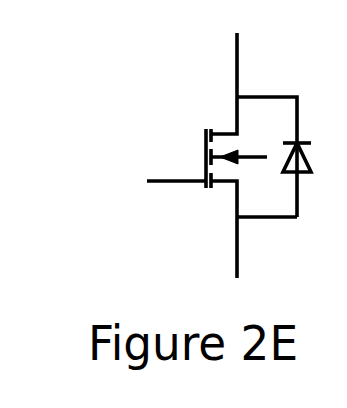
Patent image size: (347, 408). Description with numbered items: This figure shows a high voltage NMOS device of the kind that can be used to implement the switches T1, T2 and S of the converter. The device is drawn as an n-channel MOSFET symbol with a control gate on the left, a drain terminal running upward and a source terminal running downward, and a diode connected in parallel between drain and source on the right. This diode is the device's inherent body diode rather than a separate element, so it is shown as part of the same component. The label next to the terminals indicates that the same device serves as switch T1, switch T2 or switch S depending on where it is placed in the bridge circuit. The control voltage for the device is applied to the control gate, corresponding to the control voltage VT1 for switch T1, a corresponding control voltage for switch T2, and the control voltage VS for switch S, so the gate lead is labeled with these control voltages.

The switch T1 is at (154, 83).
The switch T2 is at (224, 229).
The switch S is at (274, 157).
The control voltage VT1 is at (129, 158).
The control voltage VS is at (239, 157).